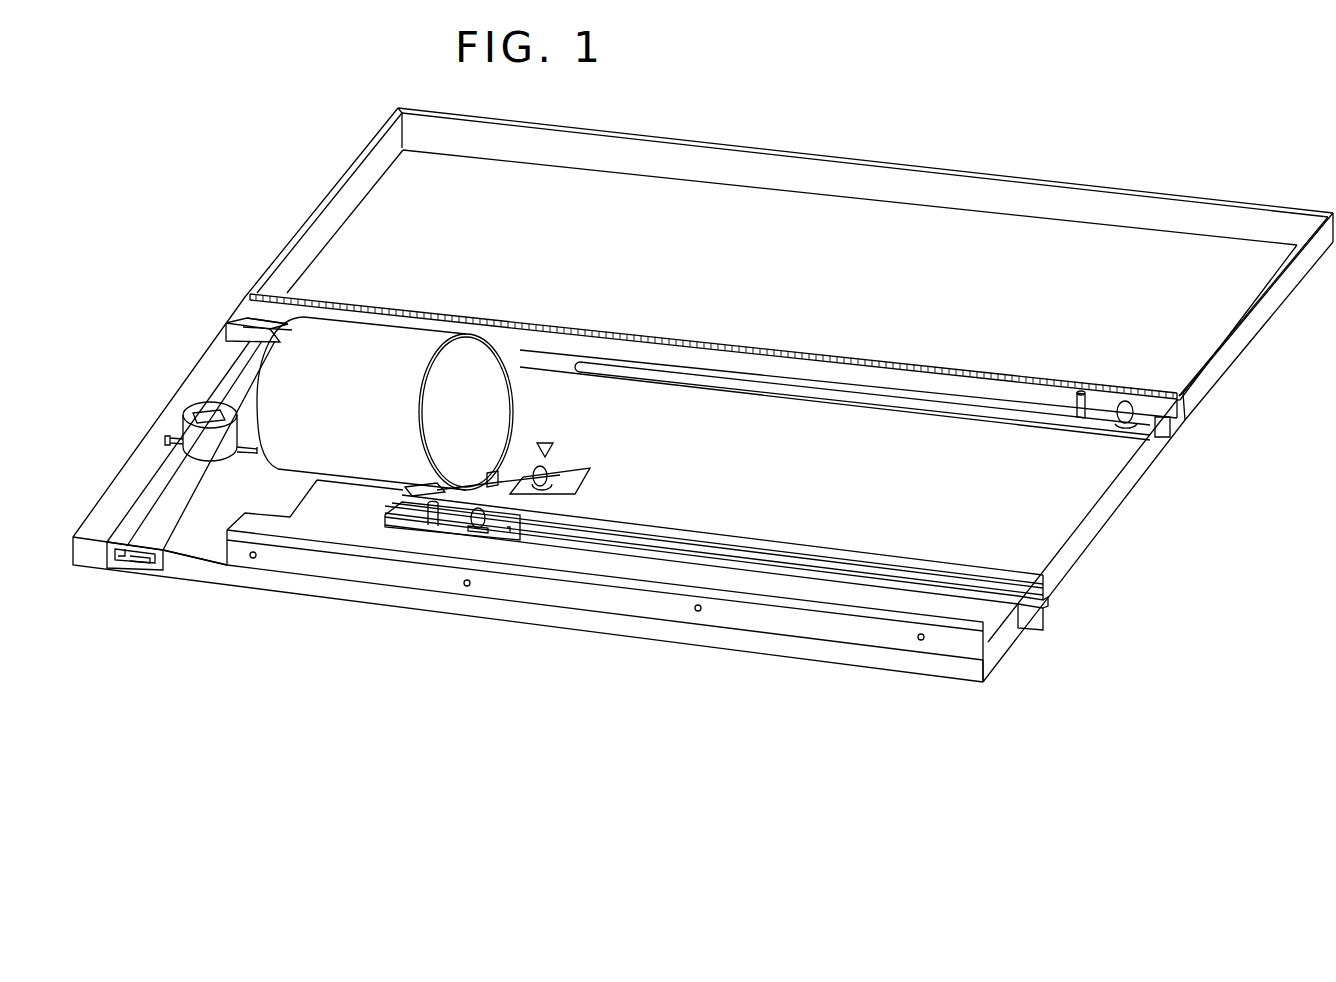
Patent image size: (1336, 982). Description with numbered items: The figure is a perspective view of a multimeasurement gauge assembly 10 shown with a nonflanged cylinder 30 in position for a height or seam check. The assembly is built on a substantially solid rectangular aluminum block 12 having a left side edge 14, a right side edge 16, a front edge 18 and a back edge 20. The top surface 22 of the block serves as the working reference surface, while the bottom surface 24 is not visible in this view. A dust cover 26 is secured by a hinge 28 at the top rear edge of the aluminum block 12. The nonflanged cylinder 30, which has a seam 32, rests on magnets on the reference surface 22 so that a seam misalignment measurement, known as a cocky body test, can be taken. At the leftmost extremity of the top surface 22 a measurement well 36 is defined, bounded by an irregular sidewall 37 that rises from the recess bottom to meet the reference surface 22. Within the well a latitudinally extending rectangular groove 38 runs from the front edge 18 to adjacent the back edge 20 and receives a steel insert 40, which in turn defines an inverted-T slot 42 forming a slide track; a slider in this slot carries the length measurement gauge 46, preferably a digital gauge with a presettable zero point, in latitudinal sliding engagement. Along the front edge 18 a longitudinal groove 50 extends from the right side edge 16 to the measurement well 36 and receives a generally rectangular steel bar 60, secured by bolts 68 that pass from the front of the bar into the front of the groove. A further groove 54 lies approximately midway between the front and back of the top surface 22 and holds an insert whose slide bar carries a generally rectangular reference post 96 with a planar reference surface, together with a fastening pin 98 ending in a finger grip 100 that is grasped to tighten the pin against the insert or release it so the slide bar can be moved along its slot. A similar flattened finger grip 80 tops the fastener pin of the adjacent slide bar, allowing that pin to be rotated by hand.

The multimeasurement gauge assembly 10 is at (1113, 516).
The aluminum block 12 is at (1097, 530).
The left side edge 14 is at (198, 372).
The right side edge 16 is at (1065, 570).
The front edge 18 is at (430, 600).
The back edge 20 is at (500, 316).
The top surface 22 is at (1093, 466).
The bottom surface 24 is at (1020, 634).
The dust cover 26 is at (583, 128).
The hinge 28 is at (828, 362).
The nonflanged cylinder 30 is at (515, 390).
The seam 32 is at (447, 468).
The measurement well 36 is at (225, 352).
The irregular sidewall 37 is at (247, 322).
The groove 38 is at (195, 578).
The steel insert 40 is at (148, 575).
The slot 42 is at (130, 565).
The length measurement gauge 46 is at (180, 406).
The longitudinally extending groove 50 is at (998, 640).
The groove 54 is at (590, 482).
The steel bar 60 is at (875, 640).
The bolts 68 is at (698, 612).
The finger grip 80 is at (478, 532).
The reference post 96 is at (486, 470).
The fastening pin 98 is at (548, 470).
The finger grip 100 is at (543, 443).